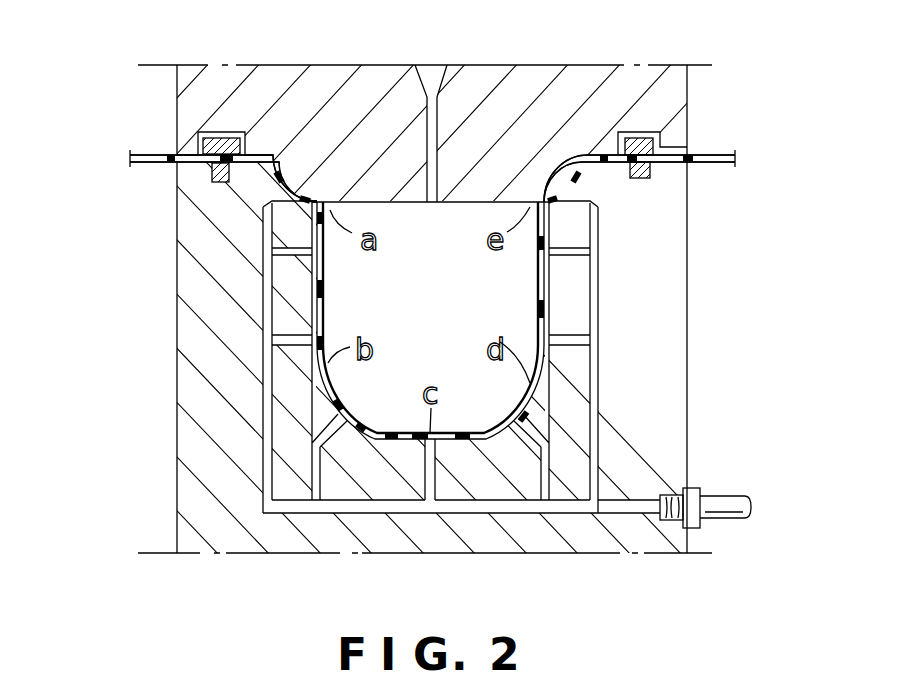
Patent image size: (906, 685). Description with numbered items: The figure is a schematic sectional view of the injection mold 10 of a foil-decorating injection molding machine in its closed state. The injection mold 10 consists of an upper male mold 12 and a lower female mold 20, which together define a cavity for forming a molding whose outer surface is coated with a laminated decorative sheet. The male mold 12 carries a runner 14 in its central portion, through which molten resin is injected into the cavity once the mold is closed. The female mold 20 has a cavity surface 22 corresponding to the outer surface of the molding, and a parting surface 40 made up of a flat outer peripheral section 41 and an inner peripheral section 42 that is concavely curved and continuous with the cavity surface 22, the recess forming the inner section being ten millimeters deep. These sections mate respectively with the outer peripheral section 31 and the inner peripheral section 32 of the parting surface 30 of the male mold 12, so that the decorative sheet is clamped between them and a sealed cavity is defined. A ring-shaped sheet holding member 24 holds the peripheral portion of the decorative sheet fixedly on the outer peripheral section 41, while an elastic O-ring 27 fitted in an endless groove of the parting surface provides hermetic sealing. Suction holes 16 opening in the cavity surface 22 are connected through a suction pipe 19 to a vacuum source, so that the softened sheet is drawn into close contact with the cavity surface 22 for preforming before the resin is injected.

The injection mold 10 is at (116, 62).
The male mold 12 is at (170, 111).
The runner 14 is at (432, 65).
The suction holes 16 is at (430, 439).
The suction pipe 19 is at (729, 500).
The female mold 20 is at (168, 468).
The cavity surface 22 is at (322, 302).
The sheet holding member 24 is at (217, 136).
The elastic O-ring 27 is at (630, 176).
The parting surface of the male mold 30 is at (756, 240).
The outer peripheral section of the male mold 31 is at (592, 182).
The inner peripheral section of the male mold 32 is at (603, 205).
The parting surface 40 is at (105, 210).
The outer peripheral section 41 is at (273, 167).
The inner peripheral section 42 is at (278, 182).